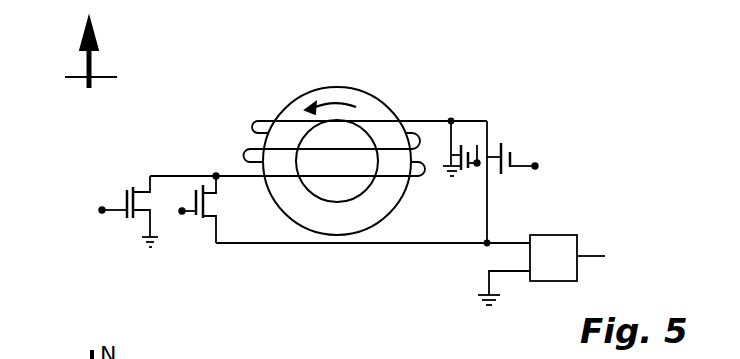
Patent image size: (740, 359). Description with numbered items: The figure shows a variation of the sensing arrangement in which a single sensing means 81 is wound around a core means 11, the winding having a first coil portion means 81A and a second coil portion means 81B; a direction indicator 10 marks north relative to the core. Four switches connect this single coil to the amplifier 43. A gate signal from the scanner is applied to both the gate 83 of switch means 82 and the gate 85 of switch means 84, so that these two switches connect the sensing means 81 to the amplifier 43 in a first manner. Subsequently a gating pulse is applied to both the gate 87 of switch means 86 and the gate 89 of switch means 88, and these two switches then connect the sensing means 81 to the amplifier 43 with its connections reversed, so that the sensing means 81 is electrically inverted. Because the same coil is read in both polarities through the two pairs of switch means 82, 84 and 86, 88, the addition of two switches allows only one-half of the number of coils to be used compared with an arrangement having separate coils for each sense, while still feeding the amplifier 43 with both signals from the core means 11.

The north direction indicator arrow 10 is at (87, 62).
The core means 11 is at (366, 93).
The sensing means 81 is at (318, 151).
The first coil portion means 81A is at (422, 179).
The second coil portion means 81B is at (256, 120).
The switch means 82 is at (502, 143).
The gate 83 is at (535, 166).
The switch means 84 is at (140, 186).
The gate 85 is at (102, 210).
The switch means 86 is at (205, 200).
The gate 87 is at (182, 212).
The switch means 88 is at (462, 171).
The gate 89 is at (477, 166).
The amplifier 43 is at (558, 234).